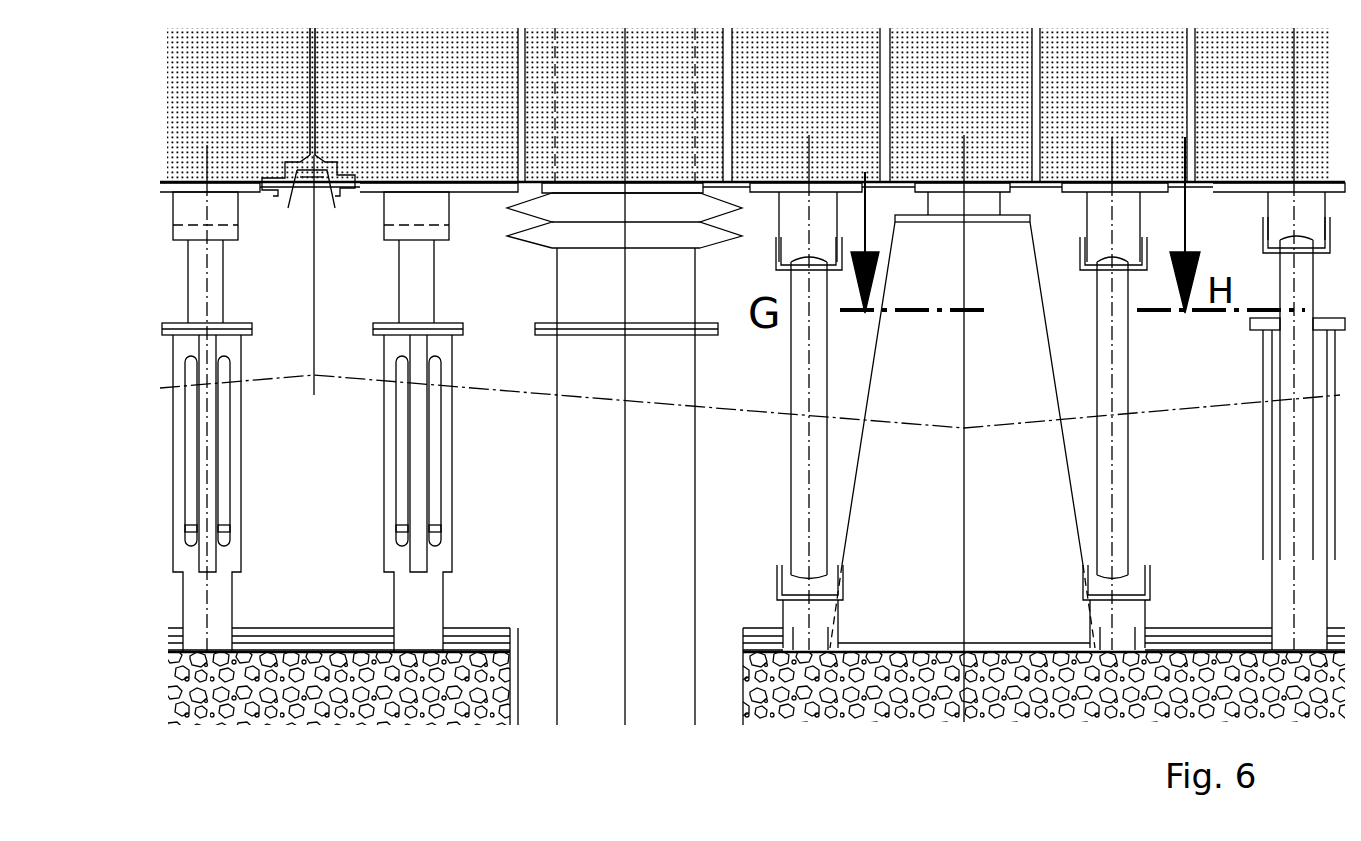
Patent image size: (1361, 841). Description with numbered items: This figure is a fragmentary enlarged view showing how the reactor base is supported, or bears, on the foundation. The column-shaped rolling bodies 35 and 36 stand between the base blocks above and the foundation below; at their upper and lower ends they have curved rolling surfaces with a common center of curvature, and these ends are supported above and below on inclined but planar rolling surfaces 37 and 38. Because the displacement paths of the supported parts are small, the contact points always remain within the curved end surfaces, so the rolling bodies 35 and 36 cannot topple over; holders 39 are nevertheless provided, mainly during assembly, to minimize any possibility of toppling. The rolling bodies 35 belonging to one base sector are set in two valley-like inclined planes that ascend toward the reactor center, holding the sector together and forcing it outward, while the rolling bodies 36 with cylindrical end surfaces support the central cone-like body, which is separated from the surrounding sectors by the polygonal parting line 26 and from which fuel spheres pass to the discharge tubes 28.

The polygonal parting line 26 is at (284, 196).
The discharge tube 28 is at (598, 655).
The column-shaped rolling body 35 is at (235, 279).
The column-shaped rolling body 36 is at (405, 268).
The upper rolling surface 37 is at (778, 263).
The lower rolling surface 38 is at (785, 568).
The holder 39 is at (1143, 258).